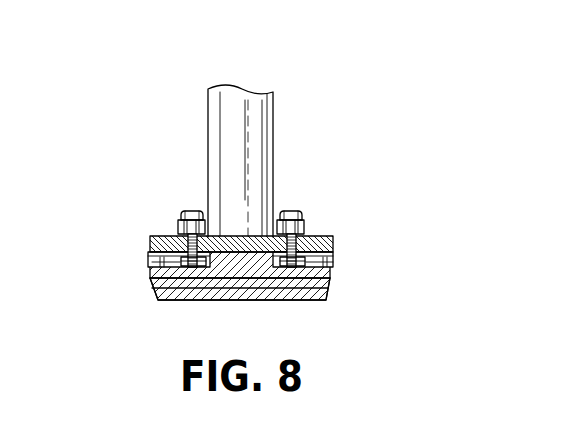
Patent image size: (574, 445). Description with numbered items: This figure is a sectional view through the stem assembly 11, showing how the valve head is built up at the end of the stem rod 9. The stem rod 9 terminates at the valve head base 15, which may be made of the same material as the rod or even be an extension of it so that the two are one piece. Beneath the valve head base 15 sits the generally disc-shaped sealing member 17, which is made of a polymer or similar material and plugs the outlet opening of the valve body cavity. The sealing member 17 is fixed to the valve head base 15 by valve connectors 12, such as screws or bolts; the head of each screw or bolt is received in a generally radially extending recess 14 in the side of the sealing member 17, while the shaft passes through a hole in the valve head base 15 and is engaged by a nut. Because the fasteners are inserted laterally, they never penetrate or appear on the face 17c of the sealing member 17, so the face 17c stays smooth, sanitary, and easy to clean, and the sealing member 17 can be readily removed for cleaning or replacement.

The stem assembly 11 is at (118, 52).
The stem rod 9 is at (258, 111).
The valve connectors 12 is at (300, 212).
The valve head base 15 is at (332, 243).
The recess 14 is at (332, 262).
The sealing member 17 is at (138, 252).
The face 17c is at (175, 298).